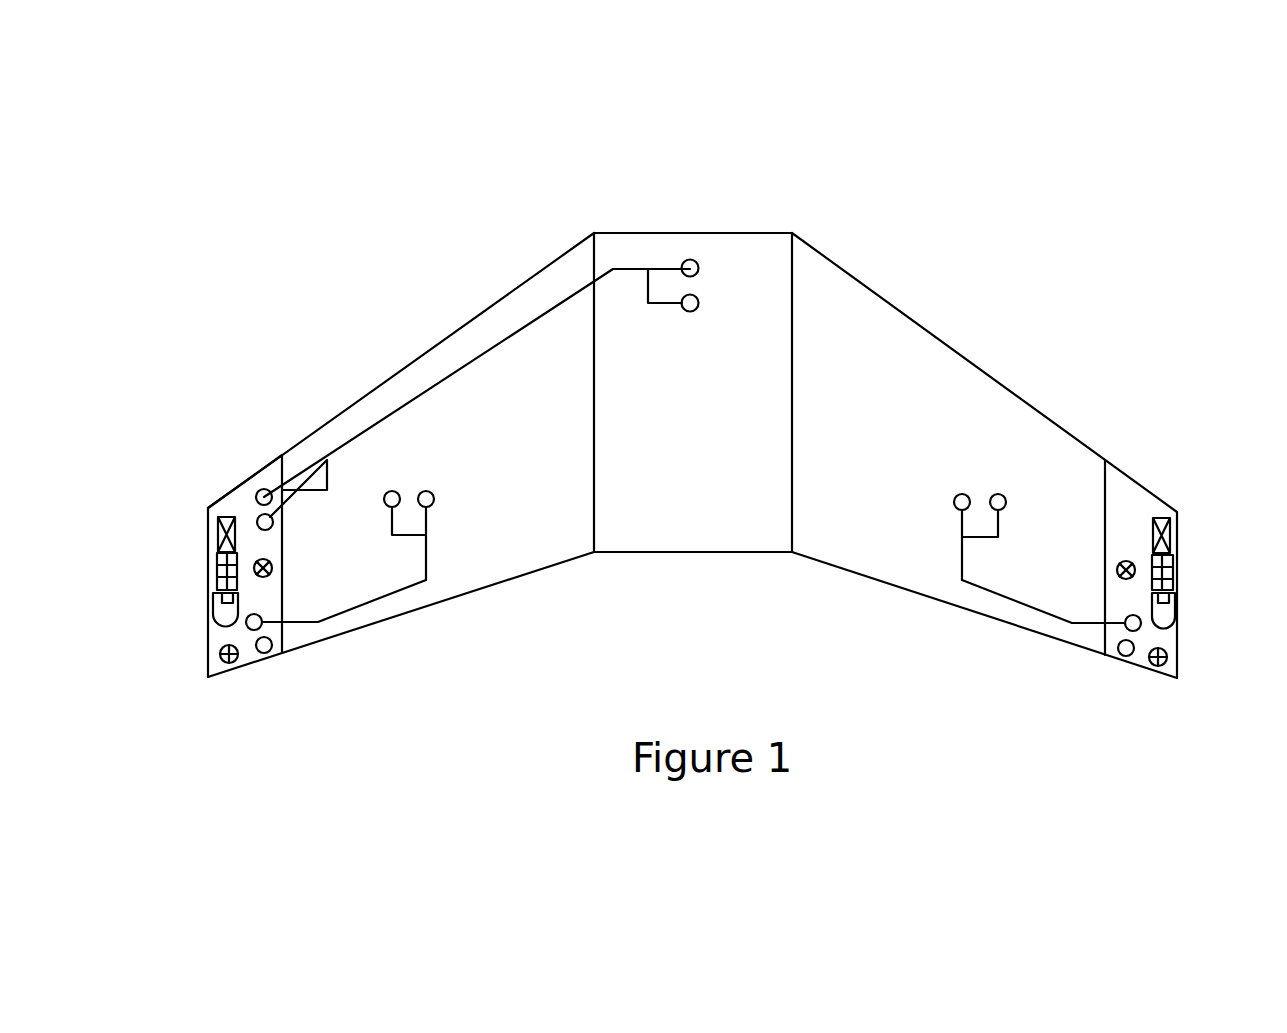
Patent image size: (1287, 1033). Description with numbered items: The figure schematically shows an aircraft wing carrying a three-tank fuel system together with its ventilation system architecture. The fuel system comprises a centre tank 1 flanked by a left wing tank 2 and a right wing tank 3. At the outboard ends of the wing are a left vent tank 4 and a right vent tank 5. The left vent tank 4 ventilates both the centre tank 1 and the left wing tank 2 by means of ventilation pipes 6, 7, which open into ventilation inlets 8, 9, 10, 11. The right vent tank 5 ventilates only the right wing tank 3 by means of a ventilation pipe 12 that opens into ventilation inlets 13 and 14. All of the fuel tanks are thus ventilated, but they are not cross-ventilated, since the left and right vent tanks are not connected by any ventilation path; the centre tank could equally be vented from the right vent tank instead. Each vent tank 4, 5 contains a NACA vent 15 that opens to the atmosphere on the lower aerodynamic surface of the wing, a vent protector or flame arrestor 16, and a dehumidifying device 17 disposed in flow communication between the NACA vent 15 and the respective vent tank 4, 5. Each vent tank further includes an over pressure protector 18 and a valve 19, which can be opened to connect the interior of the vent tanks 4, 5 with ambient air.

The centre tank 1 is at (690, 497).
The left wing tank 2 is at (488, 583).
The right wing tank 3 is at (906, 552).
The left vent tank 4 is at (245, 655).
The right vent tank 5 is at (1144, 652).
The ventilation pipe 6 is at (386, 594).
The ventilation pipe 7 is at (435, 385).
The ventilation inlet 8 is at (263, 653).
The ventilation inlet 9 is at (394, 506).
The ventilation inlet 10 is at (263, 514).
The ventilation inlet 11 is at (691, 295).
The ventilation pipe 12 is at (1008, 593).
The ventilation inlet 13 is at (1119, 650).
The ventilation inlet 14 is at (998, 493).
The NACA vent 15 is at (1226, 613).
The vent protector 16 is at (1226, 578).
The dehumidifying device 17 is at (1226, 535).
The over pressure protector 18 is at (1126, 561).
The valve 19 is at (1227, 697).